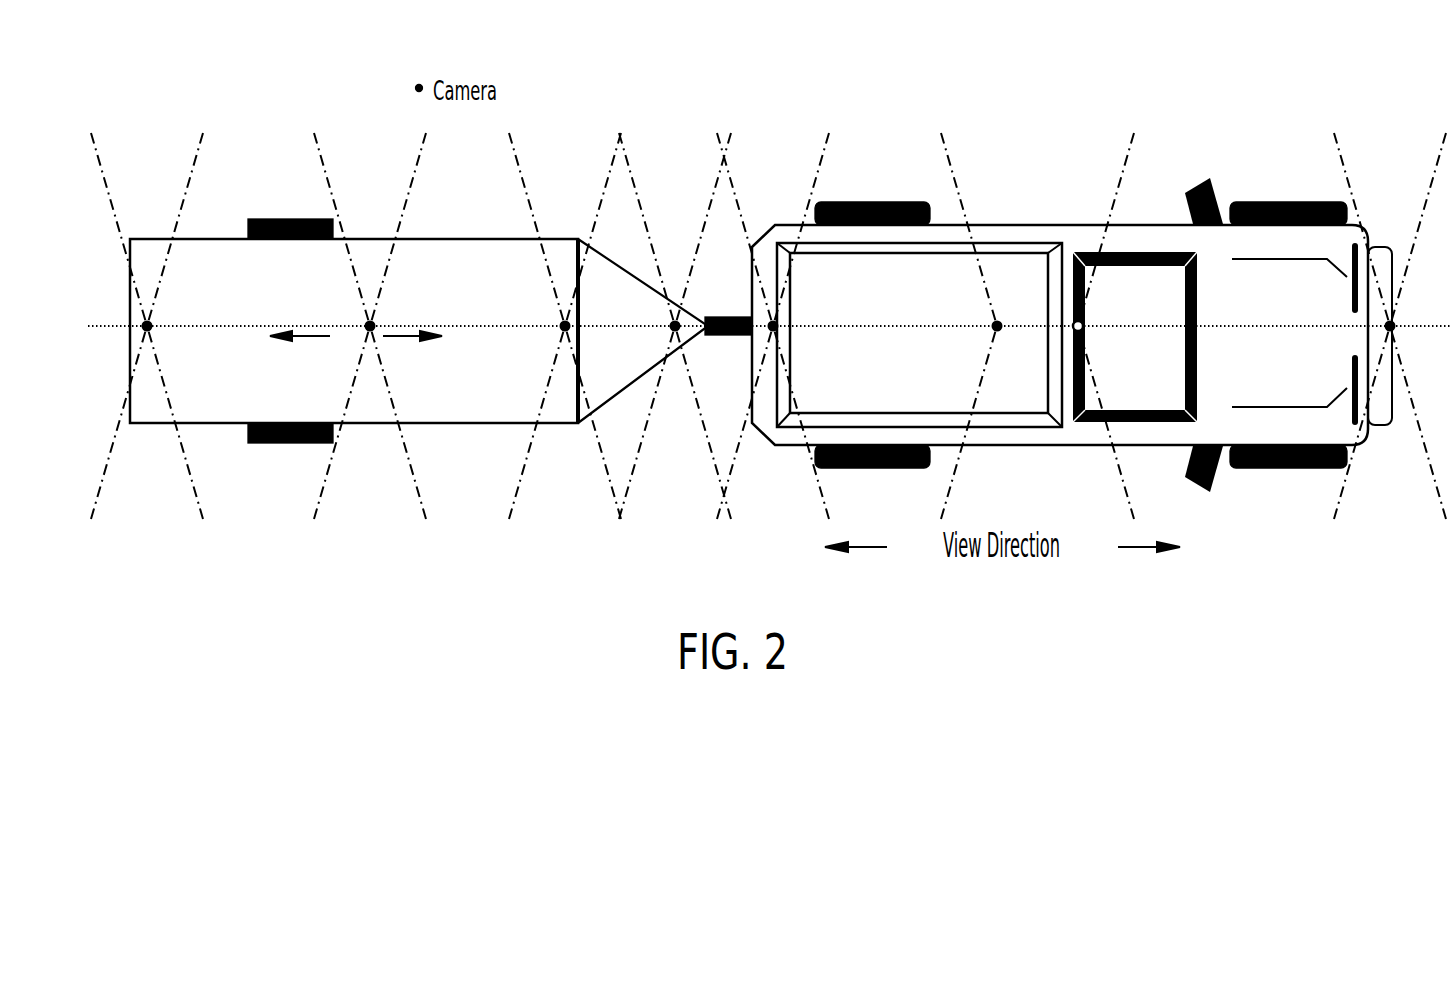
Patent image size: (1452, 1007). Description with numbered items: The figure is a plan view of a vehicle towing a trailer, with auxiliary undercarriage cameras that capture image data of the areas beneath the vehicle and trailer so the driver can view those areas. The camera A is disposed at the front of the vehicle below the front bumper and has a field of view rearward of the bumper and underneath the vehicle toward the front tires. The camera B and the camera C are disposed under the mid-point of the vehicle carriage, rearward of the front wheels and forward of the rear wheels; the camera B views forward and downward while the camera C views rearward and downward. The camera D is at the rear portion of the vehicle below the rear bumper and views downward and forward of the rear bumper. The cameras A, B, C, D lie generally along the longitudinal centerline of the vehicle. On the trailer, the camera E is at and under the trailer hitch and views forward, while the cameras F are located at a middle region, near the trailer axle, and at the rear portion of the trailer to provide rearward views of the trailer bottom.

The camera A is at (1390, 326).
The camera B is at (1103, 326).
The camera C is at (988, 326).
The camera D is at (773, 326).
The camera E is at (675, 326).
The cameras F is at (356, 326).